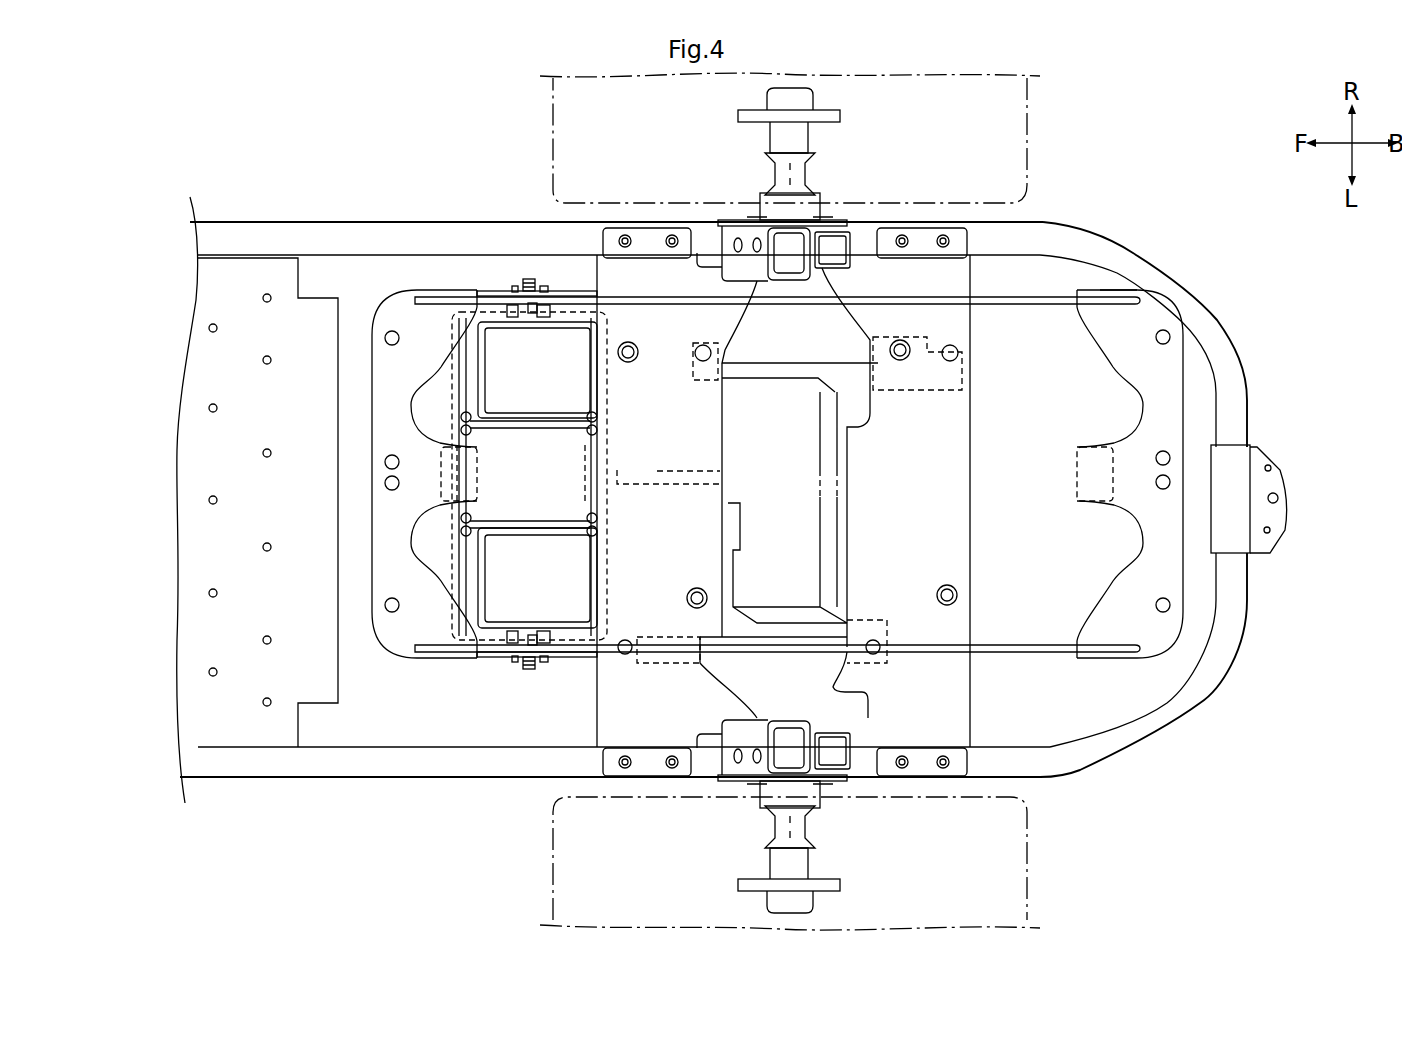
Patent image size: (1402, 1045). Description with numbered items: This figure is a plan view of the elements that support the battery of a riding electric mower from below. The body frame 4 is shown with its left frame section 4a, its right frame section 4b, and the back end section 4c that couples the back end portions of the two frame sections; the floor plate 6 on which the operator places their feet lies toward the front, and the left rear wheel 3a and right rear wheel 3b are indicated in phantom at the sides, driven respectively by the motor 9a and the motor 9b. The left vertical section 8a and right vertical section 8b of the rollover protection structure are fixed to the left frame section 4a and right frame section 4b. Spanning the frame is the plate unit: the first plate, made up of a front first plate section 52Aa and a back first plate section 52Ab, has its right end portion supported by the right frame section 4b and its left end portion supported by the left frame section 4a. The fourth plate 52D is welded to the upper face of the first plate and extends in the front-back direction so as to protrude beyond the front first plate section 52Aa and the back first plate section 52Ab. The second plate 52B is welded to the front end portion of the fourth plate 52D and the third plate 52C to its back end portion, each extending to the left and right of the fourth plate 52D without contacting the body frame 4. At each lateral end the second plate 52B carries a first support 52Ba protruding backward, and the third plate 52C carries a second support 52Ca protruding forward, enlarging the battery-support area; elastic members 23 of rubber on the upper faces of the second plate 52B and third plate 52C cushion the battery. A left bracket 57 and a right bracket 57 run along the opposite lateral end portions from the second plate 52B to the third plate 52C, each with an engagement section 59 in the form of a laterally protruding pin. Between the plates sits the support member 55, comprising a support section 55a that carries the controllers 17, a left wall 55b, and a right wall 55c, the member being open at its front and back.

The left rear wheel 3a is at (1027, 903).
The right rear wheel 3b is at (1027, 100).
The body frame 4 is at (742, 503).
The left frame section 4a is at (383, 765).
The right frame section 4b is at (383, 237).
The back end section 4c is at (1233, 598).
The floor plate 6 is at (235, 607).
The left vertical section 8a is at (795, 762).
The right vertical section 8b is at (795, 238).
The motor 9a is at (778, 627).
The motor 9b is at (777, 372).
The controller 17 is at (568, 558).
The elastic member 23 is at (634, 345).
The front first plate section 52Aa is at (567, 717).
The back first plate section 52Ab is at (976, 692).
The second plate 52B is at (372, 486).
The first support 52Ba is at (418, 318).
The third plate 52C is at (1192, 445).
The second support 52Ca is at (1135, 327).
The fourth plate 52D is at (1022, 503).
The support member 55 is at (469, 450).
The support section 55a is at (453, 397).
The left wall 55b is at (489, 638).
The right wall 55c is at (496, 312).
The bracket 57 is at (1025, 295).
The engagement section 59 is at (532, 288).